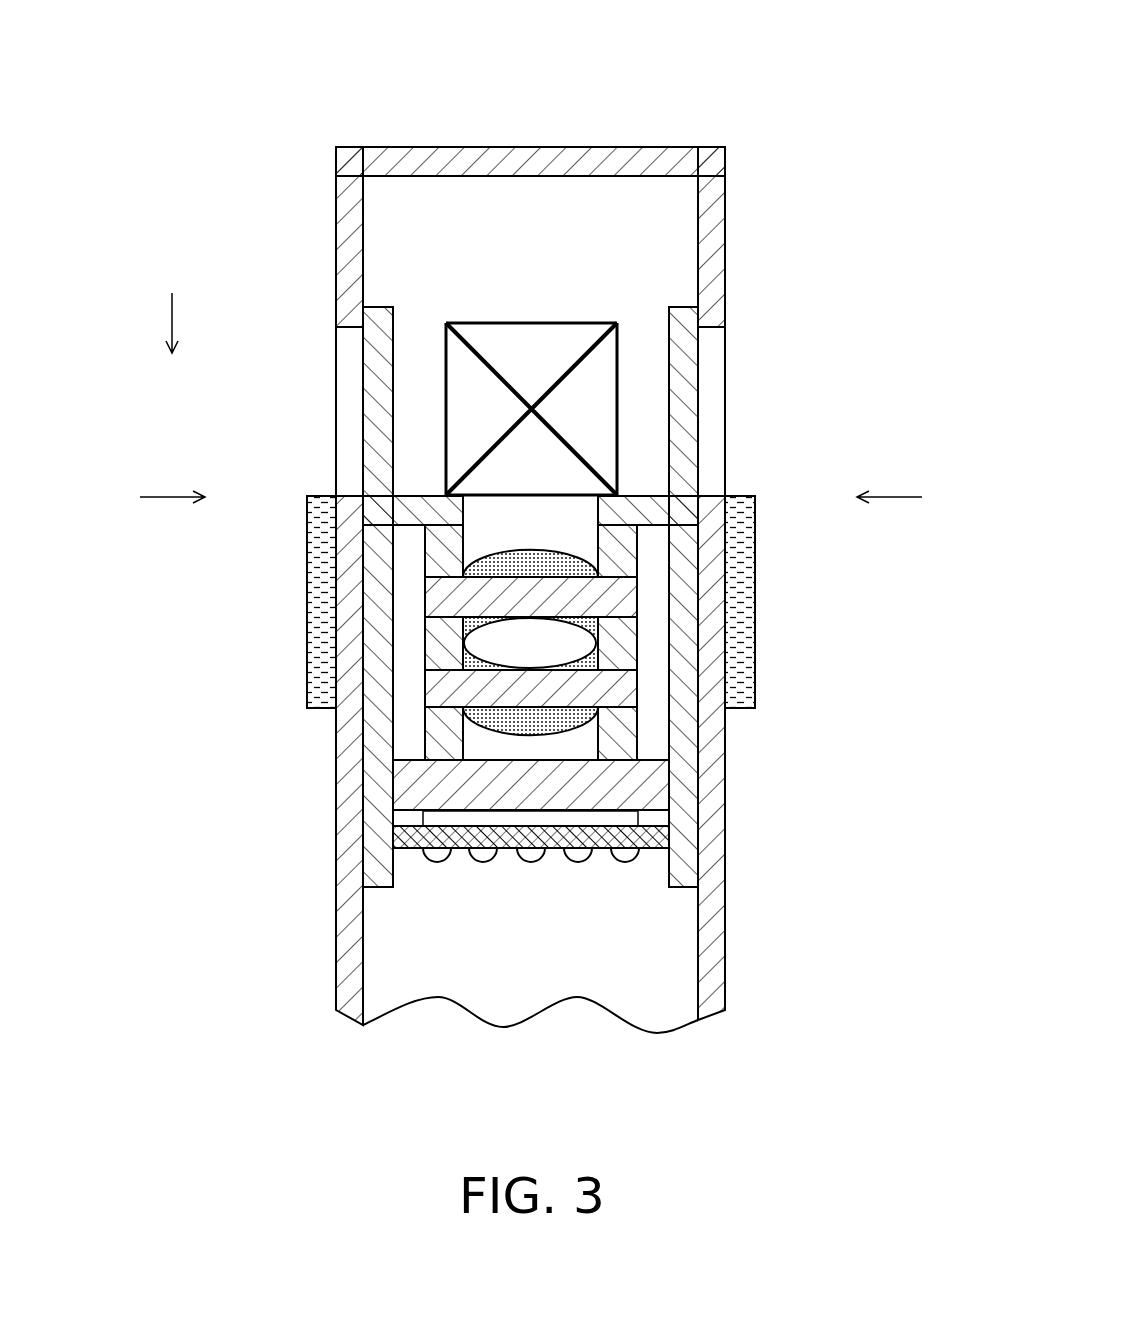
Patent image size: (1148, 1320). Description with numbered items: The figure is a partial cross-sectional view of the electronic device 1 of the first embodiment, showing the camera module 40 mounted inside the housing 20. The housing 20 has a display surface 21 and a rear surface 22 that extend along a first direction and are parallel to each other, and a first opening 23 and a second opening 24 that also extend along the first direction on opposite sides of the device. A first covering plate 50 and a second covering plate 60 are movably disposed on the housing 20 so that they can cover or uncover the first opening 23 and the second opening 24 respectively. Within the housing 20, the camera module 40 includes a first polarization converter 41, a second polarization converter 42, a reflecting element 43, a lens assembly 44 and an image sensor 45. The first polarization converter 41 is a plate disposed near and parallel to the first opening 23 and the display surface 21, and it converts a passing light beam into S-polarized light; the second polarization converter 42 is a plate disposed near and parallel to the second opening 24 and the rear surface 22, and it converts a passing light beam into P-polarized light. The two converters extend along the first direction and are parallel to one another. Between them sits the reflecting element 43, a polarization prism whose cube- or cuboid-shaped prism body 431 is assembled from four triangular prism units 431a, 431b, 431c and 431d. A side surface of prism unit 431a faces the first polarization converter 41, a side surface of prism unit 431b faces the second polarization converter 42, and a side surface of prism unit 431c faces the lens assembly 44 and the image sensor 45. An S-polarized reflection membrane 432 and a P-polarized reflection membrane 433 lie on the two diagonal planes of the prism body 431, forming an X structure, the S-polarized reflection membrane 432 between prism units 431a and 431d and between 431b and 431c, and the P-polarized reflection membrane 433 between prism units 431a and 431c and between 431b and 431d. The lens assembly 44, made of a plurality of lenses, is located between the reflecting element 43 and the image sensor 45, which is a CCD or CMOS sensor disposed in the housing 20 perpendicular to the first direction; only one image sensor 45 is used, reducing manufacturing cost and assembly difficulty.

The electronic device 1 is at (820, 46).
The housing 20 is at (529, 590).
The display surface 21 is at (336, 250).
The rear surface 22 is at (725, 248).
The first opening 23 is at (348, 368).
The second opening 24 is at (713, 370).
The camera module 40 is at (544, 499).
The first polarization converter 41 is at (378, 440).
The second polarization converter 42 is at (683, 440).
The reflecting element 43 is at (393, 71).
The prism body 431 is at (531, 284).
The prism unit 431a is at (448, 420).
The prism unit 431b is at (554, 420).
The prism unit 431c is at (531, 475).
The prism unit 431d is at (497, 366).
The S-polarized reflection membrane 432 is at (500, 447).
The P-polarized reflection membrane 433 is at (550, 428).
The lens assembly 44 is at (641, 590).
The image sensor 45 is at (647, 790).
The first covering plate 50 is at (320, 608).
The second covering plate 60 is at (739, 608).